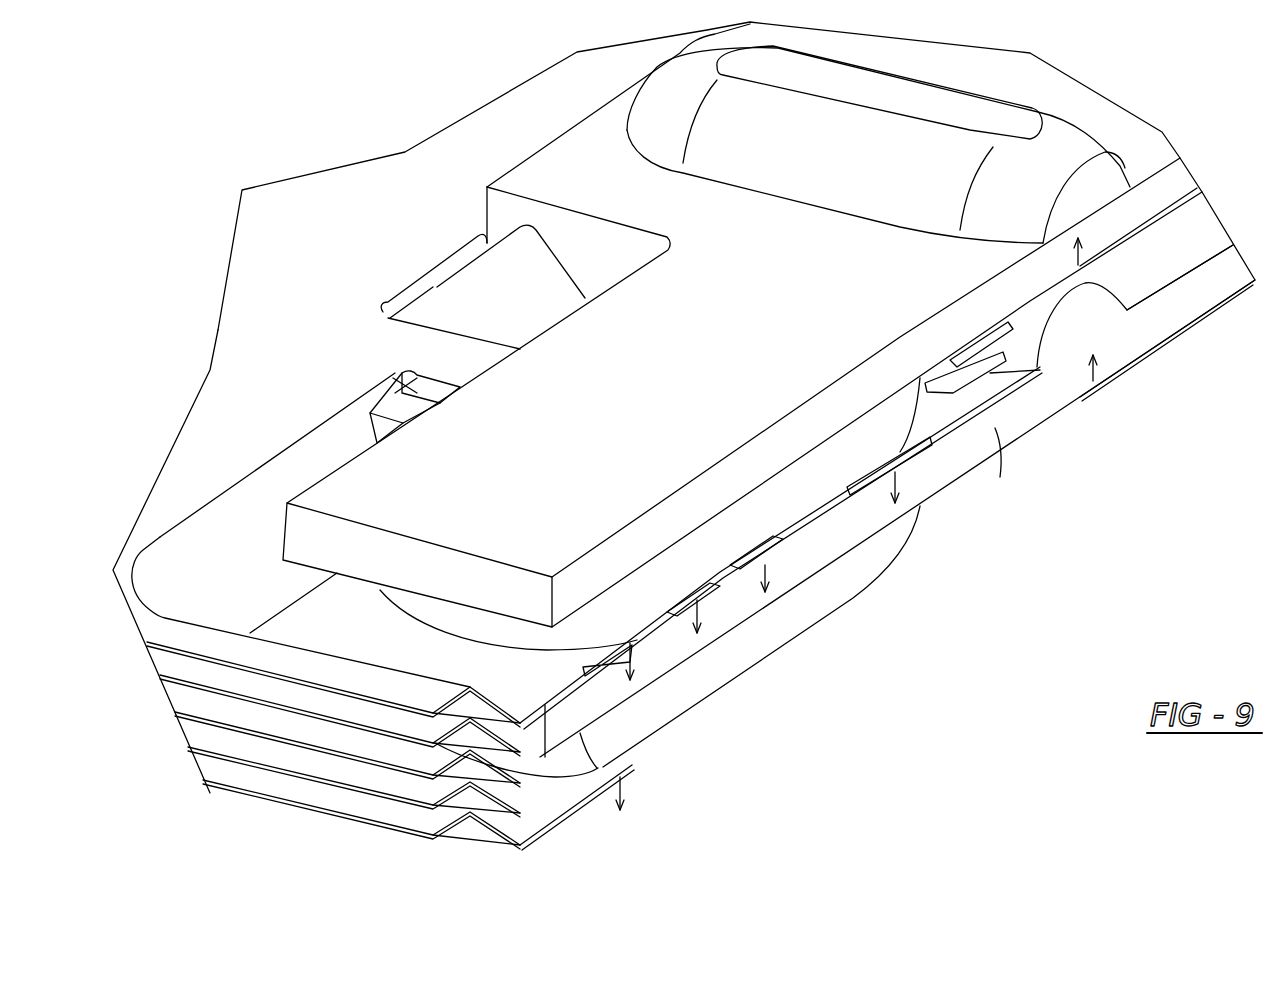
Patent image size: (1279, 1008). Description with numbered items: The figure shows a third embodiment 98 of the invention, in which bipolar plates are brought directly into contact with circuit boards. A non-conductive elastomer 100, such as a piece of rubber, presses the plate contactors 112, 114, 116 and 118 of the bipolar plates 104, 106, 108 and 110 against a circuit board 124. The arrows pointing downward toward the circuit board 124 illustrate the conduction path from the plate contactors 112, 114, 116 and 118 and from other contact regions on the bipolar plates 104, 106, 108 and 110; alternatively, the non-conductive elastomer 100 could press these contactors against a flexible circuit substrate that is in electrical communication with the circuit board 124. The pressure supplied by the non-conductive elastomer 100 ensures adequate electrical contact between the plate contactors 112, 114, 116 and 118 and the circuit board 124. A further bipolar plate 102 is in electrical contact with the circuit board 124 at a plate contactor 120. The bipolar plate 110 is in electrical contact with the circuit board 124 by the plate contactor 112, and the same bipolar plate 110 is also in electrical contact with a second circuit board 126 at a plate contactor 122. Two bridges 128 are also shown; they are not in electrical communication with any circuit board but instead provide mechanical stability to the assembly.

The third embodiment 98 is at (419, 79).
The non-conductive elastomer 100 is at (838, 596).
The bipolar plate 102 is at (413, 837).
The bipolar plate 104 is at (365, 770).
The bipolar plate 106 is at (322, 750).
The bipolar plate 108 is at (293, 707).
The bipolar plate 110 is at (273, 673).
The plate contactor 112 is at (637, 670).
The plate contactor 114 is at (703, 613).
The plate contactor 116 is at (771, 563).
The plate contactor 118 is at (935, 447).
The plate contactor 120 is at (1130, 366).
The plate contactor 122 is at (1140, 230).
The circuit board 124 is at (1000, 477).
The circuit board 126 is at (1172, 173).
The bridges 128 is at (1003, 330).